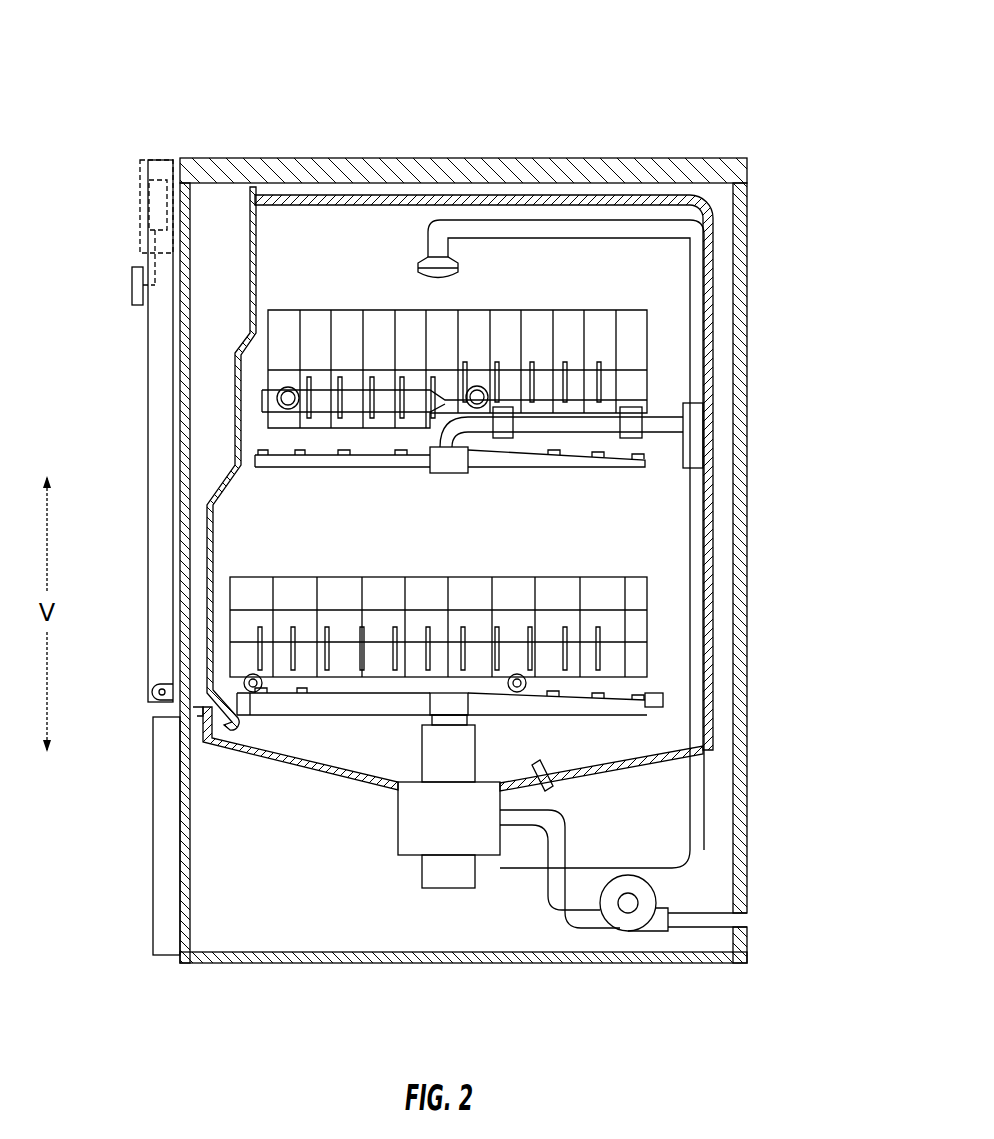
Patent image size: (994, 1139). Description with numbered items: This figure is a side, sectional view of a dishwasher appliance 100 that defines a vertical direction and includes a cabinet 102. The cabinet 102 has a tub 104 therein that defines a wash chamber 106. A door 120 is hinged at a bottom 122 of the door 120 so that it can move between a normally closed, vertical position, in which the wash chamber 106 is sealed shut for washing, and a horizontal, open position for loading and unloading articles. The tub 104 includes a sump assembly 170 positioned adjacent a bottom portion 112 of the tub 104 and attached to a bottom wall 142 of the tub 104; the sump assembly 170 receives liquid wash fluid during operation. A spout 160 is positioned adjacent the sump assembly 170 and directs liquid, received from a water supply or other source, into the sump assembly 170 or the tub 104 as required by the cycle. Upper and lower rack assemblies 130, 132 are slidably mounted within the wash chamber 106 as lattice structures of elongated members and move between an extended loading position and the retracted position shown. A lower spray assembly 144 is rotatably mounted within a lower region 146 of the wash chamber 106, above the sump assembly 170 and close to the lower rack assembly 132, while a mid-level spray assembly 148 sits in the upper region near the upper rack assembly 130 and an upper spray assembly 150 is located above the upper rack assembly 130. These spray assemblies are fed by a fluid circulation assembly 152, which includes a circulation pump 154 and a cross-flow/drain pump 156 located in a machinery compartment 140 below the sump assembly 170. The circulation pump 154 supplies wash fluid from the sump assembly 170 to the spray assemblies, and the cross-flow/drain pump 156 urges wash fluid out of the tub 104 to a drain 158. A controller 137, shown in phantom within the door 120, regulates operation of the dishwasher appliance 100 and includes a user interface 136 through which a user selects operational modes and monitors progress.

The dishwasher appliance 100 is at (636, 48).
The cabinet 102 is at (748, 208).
The tub 104 is at (710, 578).
The wash chamber 106 is at (243, 518).
The bottom portion 112 is at (185, 967).
The door 120 is at (148, 585).
The bottom of door 122 is at (150, 700).
The rack assembly 130 is at (454, 374).
The rack assembly 132 is at (438, 609).
The user interface 136 is at (133, 288).
The controller 137 is at (148, 212).
The machinery compartment 140 is at (298, 935).
The bottom wall 142 is at (675, 755).
The lower spray assembly 144 is at (307, 712).
The lower region 146 is at (660, 720).
The mid-level spray assembly 148 is at (486, 463).
The upper spray assembly 150 is at (462, 268).
The fluid circulation assembly 152 is at (700, 287).
The circulation pump 154 is at (430, 882).
The cross-flow/drain pump 156 is at (625, 920).
The drain 158 is at (753, 921).
The spout 160 is at (548, 790).
The sump assembly 170 is at (398, 798).